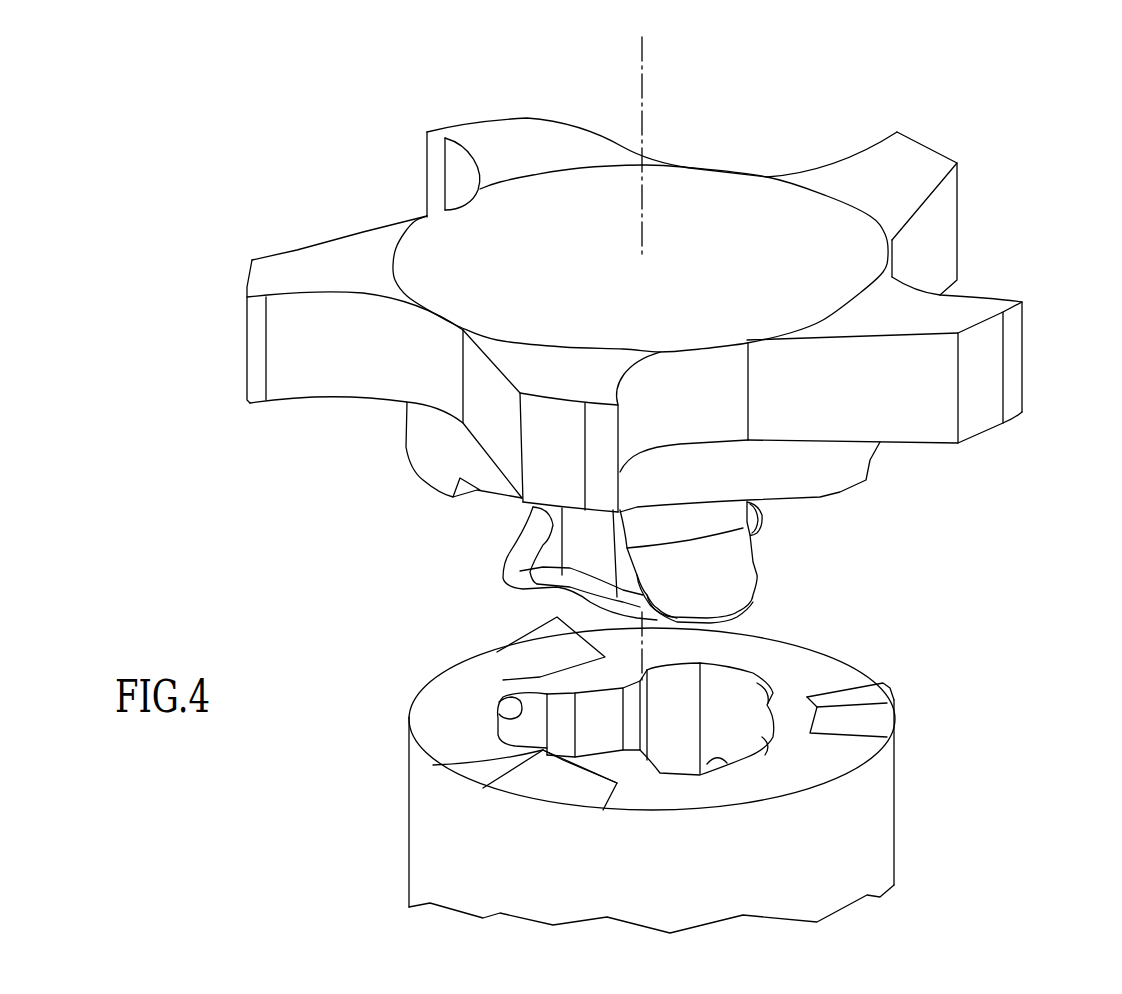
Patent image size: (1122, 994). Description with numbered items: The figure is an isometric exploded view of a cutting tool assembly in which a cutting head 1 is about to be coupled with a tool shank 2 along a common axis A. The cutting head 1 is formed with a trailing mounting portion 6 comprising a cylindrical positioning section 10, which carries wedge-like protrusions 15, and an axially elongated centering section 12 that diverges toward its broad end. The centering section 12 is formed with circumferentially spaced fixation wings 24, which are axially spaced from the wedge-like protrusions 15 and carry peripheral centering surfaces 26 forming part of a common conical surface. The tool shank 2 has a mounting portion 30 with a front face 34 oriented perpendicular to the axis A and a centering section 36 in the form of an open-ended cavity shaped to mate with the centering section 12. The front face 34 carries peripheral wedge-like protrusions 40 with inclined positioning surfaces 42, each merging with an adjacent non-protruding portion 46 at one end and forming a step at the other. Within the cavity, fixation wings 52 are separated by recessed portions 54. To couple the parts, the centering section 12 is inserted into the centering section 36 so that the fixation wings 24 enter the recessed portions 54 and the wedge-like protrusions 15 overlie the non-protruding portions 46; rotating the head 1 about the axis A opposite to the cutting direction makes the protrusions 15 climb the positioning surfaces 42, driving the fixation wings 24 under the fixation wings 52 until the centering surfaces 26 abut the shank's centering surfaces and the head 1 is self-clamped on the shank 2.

The cutting head 1 is at (1012, 147).
The tool shank 2 is at (940, 825).
The trailing mounting portion 6 is at (890, 479).
The cylindrical positioning section 10 is at (417, 447).
The centering section 12 is at (520, 526).
The wedge-like protrusions 15 is at (427, 487).
The fixation wings 24 is at (489, 596).
The peripheral centering surfaces 26 is at (515, 551).
The mounting portion 30 is at (917, 694).
The front face 34 is at (430, 687).
The centering section 36 is at (678, 727).
The wedge-like protrusions 40 is at (437, 768).
The positioning surfaces 42 is at (534, 664).
The non-protruding portions 46 is at (459, 737).
The fixation wings 52 is at (600, 712).
The recessed portions 54 is at (457, 697).
The axis A is at (642, 97).